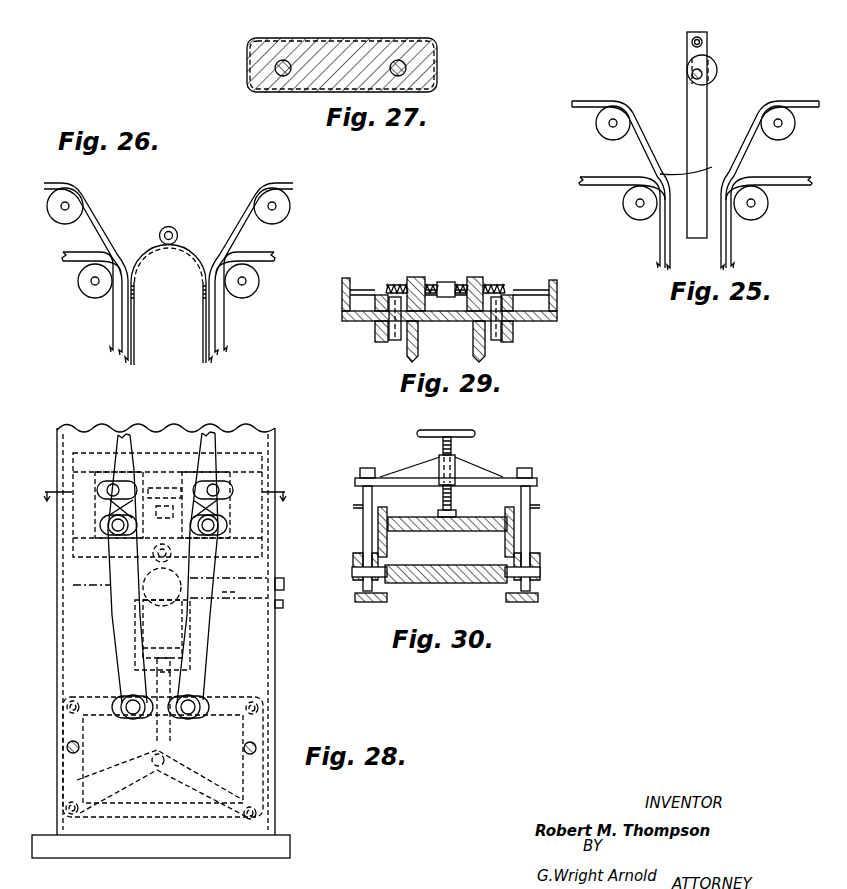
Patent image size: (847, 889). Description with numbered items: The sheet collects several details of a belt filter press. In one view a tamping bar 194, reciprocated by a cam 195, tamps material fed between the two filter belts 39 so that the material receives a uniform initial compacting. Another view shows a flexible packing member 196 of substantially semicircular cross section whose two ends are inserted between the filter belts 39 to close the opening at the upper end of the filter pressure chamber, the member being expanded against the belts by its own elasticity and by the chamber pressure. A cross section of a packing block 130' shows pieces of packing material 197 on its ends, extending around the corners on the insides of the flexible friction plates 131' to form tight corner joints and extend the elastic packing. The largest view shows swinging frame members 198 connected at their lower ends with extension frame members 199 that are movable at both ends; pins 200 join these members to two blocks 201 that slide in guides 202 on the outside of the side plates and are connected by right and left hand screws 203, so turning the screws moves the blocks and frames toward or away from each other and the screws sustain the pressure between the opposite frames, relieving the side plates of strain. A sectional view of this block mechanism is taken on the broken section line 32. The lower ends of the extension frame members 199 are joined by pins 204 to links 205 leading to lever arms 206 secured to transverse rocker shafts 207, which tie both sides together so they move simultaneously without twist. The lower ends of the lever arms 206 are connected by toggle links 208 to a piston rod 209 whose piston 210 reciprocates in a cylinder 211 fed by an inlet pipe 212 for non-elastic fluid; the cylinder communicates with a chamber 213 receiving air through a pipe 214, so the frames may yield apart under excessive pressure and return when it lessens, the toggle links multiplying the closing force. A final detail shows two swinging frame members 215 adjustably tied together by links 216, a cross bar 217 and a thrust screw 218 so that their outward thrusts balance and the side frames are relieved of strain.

In FIG. 27, the packing block 130' is at (342, 55).
In FIG. 27, the flexible friction plates 131' is at (333, 66).
In FIG. 27, the pieces of packing material 197 is at (247, 63).
In FIG. 26, the flexible packing member 196 is at (200, 262).
In FIG. 26, the filter belts 39 is at (204, 321).
In FIG. 25, the filter belts 39 is at (736, 164).
In FIG. 25, the tamping bar 194 is at (697, 108).
In FIG. 25, the cam 195 is at (718, 70).
In FIG. 29, the pins 200 is at (475, 340).
In FIG. 28, the pins 200 is at (164, 493).
In FIG. 29, the blocks 201 is at (384, 298).
In FIG. 28, the blocks 201 is at (143, 482).
In FIG. 29, the guides 202 is at (545, 300).
In FIG. 28, the guides 202 is at (228, 498).
In FIG. 29, the right and left hand screws 203 is at (503, 283).
In FIG. 28, the right and left hand screws 203 is at (100, 503).
In FIG. 30, the swinging frame members 215 is at (452, 573).
In FIG. 30, the links 216 is at (372, 493).
In FIG. 30, the cross bar 217 is at (488, 480).
In FIG. 30, the thrust screw 218 is at (440, 447).
In FIG. 28, the swinging frame members 198 is at (200, 443).
In FIG. 28, the extension frame members 199 is at (120, 640).
In FIG. 28, the section line 32 is at (167, 504).
In FIG. 28, the pins 204 is at (188, 714).
In FIG. 28, the links 205 is at (93, 698).
In FIG. 28, the lever arms 206 is at (243, 775).
In FIG. 28, the transverse rocker shafts 207 is at (79, 747).
In FIG. 28, the toggle links 208 is at (205, 800).
In FIG. 28, the piston rod 209 is at (164, 745).
In FIG. 28, the piston 210 is at (165, 684).
In FIG. 28, the cylinder 211 is at (135, 625).
In FIG. 28, the inlet pipe 212 is at (236, 621).
In FIG. 28, the chamber 213 is at (140, 587).
In FIG. 28, the pipe 214 is at (226, 592).